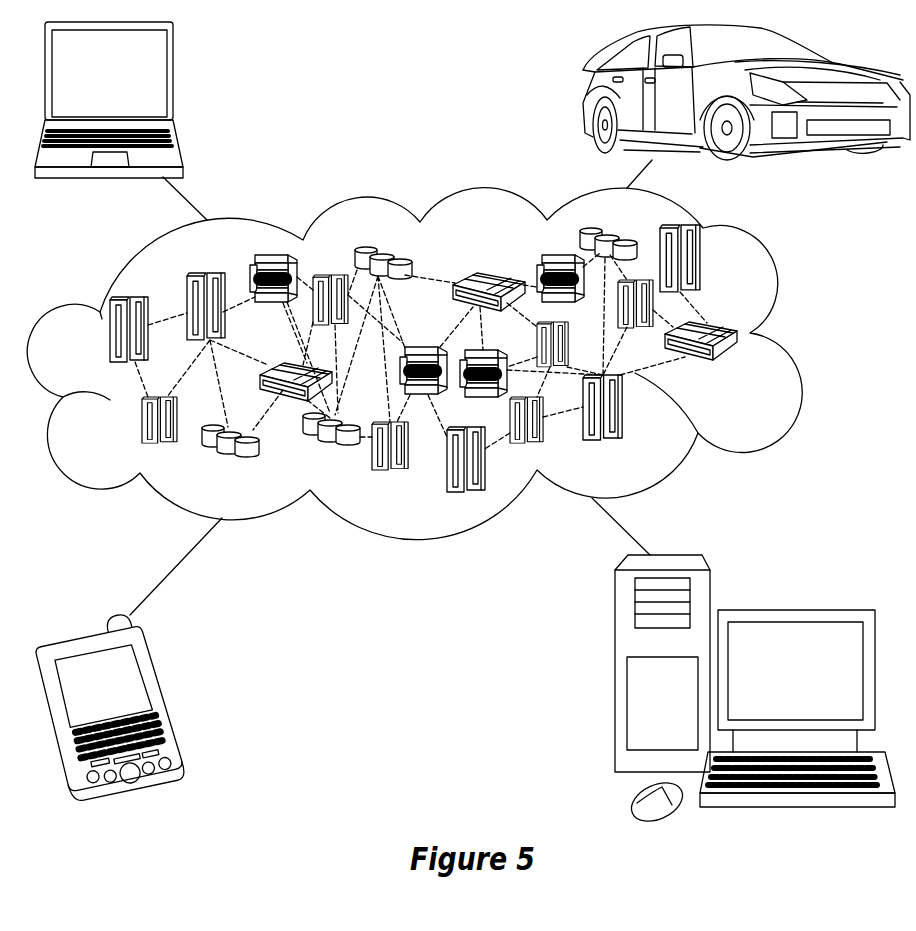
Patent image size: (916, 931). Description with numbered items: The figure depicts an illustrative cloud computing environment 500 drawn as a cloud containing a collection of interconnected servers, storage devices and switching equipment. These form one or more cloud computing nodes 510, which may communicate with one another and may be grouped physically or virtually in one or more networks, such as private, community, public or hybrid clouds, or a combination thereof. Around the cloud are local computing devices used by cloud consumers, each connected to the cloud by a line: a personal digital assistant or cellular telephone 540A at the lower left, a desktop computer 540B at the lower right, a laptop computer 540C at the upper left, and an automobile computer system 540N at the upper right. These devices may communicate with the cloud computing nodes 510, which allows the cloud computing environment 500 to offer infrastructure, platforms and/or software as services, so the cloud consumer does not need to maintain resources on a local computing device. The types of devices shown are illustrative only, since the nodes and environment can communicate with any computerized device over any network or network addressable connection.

The cloud computing environment 500 is at (793, 341).
The cloud computing nodes 510 is at (742, 368).
The personal digital assistant (PDA) or cellular telephone 540A is at (165, 699).
The desktop computer 540B is at (792, 610).
The laptop computer 540C is at (173, 83).
The automobile computer system 540N is at (585, 95).